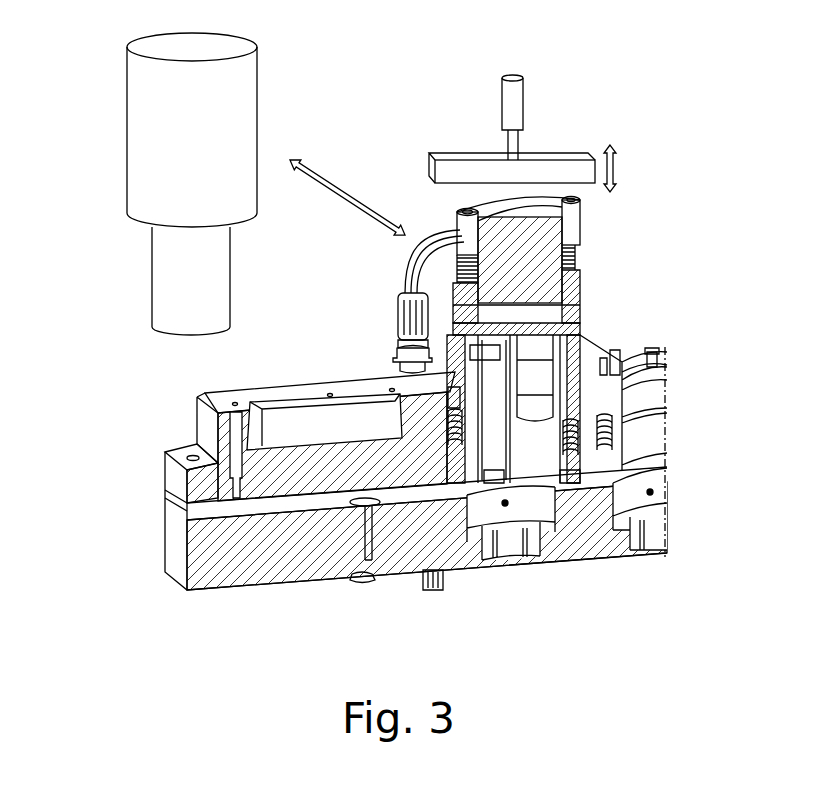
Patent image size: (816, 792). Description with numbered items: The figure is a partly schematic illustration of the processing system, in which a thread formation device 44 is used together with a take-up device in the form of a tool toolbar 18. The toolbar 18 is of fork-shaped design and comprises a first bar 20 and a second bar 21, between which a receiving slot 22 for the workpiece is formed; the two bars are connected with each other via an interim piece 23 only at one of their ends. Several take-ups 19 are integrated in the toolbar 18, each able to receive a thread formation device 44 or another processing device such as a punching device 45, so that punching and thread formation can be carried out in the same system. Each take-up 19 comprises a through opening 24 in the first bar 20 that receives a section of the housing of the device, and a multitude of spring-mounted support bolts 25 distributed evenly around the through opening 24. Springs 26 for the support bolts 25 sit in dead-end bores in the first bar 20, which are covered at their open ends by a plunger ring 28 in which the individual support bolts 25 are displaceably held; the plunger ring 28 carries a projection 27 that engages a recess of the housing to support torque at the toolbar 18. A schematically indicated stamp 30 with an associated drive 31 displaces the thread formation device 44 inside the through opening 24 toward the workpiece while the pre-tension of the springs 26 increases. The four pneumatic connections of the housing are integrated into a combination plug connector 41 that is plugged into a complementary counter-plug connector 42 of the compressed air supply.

The tool toolbar 18 is at (152, 525).
The take-up 19 is at (515, 495).
The first bar 20 is at (205, 425).
The second bar 21 is at (190, 548).
The receiving slot 22 is at (267, 505).
The interim piece 23 is at (165, 498).
The through opening 24 is at (648, 445).
The support bolt 25 is at (603, 358).
The spring 26 is at (623, 427).
The projection 27 is at (651, 350).
The plunger ring 28 is at (660, 368).
The stamp 30 is at (555, 168).
The drive 31 is at (508, 93).
The combination plug connector 41 is at (398, 308).
The counter-plug connector 42 is at (393, 355).
The thread formation device 44 is at (590, 215).
The punching device 45 is at (146, 118).